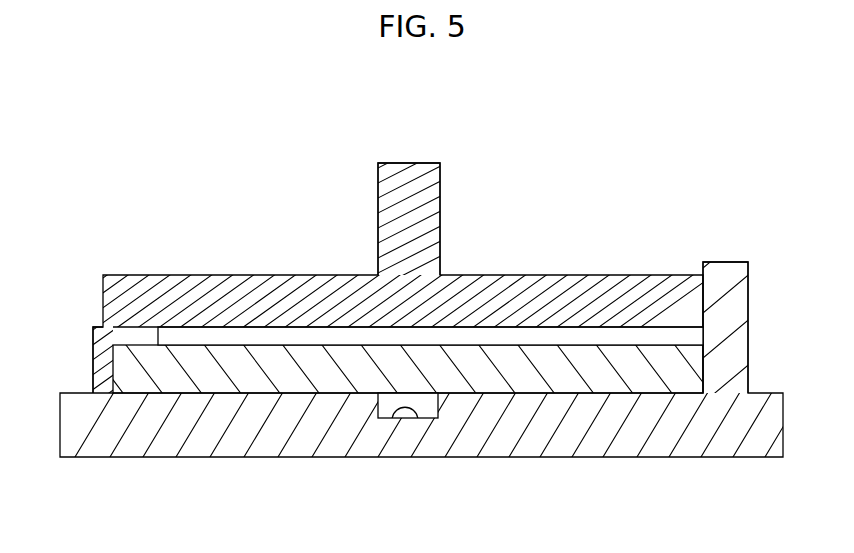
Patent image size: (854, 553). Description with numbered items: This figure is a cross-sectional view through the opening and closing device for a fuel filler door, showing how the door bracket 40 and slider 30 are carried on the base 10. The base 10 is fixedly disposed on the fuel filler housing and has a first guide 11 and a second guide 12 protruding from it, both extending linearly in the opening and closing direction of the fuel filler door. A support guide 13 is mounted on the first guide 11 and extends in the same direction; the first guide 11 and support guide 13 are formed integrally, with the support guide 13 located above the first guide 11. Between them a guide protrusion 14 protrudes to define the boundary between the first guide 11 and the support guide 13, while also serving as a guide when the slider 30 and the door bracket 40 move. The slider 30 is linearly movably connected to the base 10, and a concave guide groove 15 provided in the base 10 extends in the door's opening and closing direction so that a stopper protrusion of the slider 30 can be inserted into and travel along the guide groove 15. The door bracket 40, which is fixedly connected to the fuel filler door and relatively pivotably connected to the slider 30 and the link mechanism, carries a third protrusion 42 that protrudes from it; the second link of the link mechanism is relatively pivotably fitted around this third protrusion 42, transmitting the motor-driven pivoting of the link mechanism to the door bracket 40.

The base 10 is at (210, 430).
The first guide 11 is at (740, 362).
The second guide 12 is at (107, 367).
The support guide 13 is at (738, 297).
The guide protrusion 14 is at (692, 341).
The guide groove 15 is at (413, 412).
The slider 30 is at (593, 375).
The door bracket 40 is at (230, 295).
The third protrusion 42 is at (423, 193).